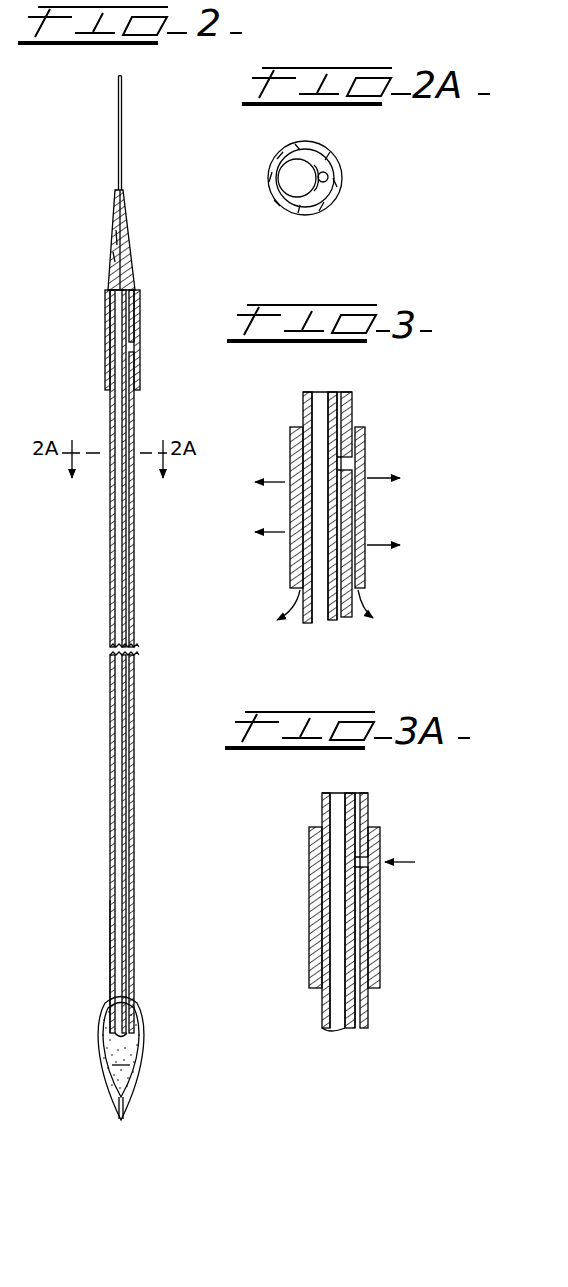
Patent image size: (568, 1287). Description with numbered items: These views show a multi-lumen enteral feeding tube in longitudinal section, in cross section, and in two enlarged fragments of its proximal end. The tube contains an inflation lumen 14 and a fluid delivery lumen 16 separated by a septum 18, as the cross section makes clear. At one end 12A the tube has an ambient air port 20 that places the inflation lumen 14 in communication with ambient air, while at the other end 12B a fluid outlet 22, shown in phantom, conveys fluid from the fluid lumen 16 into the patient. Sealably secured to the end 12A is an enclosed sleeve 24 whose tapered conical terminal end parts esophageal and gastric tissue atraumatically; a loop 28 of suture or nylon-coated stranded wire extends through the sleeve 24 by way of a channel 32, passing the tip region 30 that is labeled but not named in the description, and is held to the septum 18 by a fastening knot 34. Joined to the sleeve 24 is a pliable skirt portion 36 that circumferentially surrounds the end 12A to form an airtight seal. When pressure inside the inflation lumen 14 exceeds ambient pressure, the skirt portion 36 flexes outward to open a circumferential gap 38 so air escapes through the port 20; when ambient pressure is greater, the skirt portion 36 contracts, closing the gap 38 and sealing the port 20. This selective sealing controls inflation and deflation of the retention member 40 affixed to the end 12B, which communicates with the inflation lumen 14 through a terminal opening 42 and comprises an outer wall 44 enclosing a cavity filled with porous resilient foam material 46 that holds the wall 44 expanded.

In FIG. 2, the end of tube 12A is at (110, 403).
In FIG. 2, the other end of tube 12B is at (112, 955).
In FIG. 2, the inflation lumen 14 is at (126, 683).
In FIG. 2A, the inflation lumen 14 is at (328, 175).
In FIG. 3, the inflation lumen 14 is at (340, 392).
In FIG. 3A, the inflation lumen 14 is at (358, 1027).
In FIG. 2, the fluid delivery lumen 16 is at (118, 606).
In FIG. 2A, the fluid delivery lumen 16 is at (290, 170).
In FIG. 3, the fluid delivery lumen 16 is at (320, 623).
In FIG. 3A, the fluid delivery lumen 16 is at (337, 1023).
In FIG. 2, the septum 18 is at (122, 555).
In FIG. 2A, the septum 18 is at (318, 203).
In FIG. 3, the septum 18 is at (332, 392).
In FIG. 3A, the septum 18 is at (348, 792).
In FIG. 2, the ambient air port 20 is at (130, 345).
In FIG. 3, the ambient air port 20 is at (353, 467).
In FIG. 3A, the ambient air port 20 is at (380, 863).
In FIG. 2, the fluid outlet 22 is at (120, 1068).
In FIG. 2, the enclosed sleeve 24 is at (133, 262).
In FIG. 2, the loop 28 is at (118, 125).
In FIG. 2, the tip wall 30 is at (116, 237).
In FIG. 2, the channel 32 is at (117, 257).
In FIG. 2, the fastening knot 34 is at (110, 290).
In FIG. 2, the skirt portion 36 is at (138, 371).
In FIG. 3, the skirt portion 36 is at (365, 517).
In FIG. 3A, the skirt portion 36 is at (308, 903).
In FIG. 3, the circumferential gap 38 is at (303, 427).
In FIG. 2, the retention/anchor member 40 is at (138, 1090).
In FIG. 2, the terminal opening 42 is at (127, 1038).
In FIG. 2, the outer wall 44 is at (100, 1037).
In FIG. 2, the porous resilient foam material 46 is at (136, 1055).